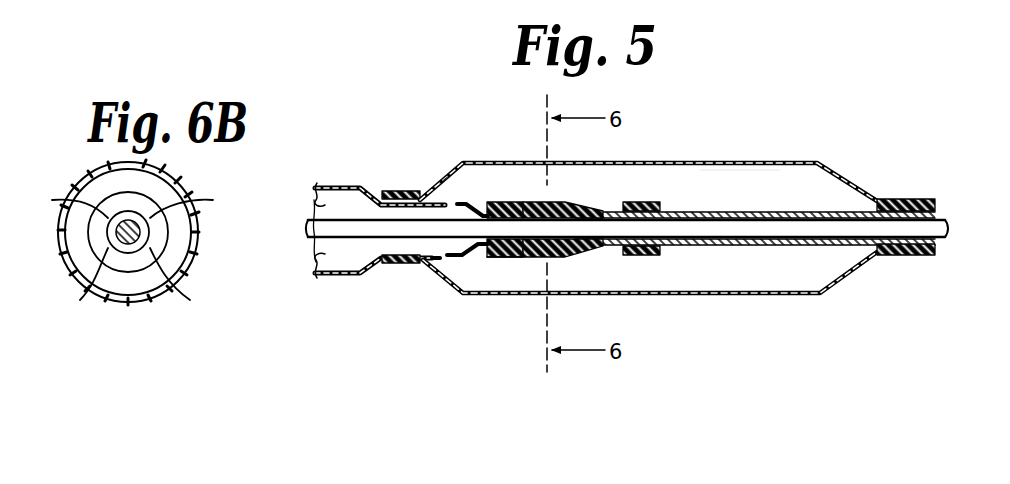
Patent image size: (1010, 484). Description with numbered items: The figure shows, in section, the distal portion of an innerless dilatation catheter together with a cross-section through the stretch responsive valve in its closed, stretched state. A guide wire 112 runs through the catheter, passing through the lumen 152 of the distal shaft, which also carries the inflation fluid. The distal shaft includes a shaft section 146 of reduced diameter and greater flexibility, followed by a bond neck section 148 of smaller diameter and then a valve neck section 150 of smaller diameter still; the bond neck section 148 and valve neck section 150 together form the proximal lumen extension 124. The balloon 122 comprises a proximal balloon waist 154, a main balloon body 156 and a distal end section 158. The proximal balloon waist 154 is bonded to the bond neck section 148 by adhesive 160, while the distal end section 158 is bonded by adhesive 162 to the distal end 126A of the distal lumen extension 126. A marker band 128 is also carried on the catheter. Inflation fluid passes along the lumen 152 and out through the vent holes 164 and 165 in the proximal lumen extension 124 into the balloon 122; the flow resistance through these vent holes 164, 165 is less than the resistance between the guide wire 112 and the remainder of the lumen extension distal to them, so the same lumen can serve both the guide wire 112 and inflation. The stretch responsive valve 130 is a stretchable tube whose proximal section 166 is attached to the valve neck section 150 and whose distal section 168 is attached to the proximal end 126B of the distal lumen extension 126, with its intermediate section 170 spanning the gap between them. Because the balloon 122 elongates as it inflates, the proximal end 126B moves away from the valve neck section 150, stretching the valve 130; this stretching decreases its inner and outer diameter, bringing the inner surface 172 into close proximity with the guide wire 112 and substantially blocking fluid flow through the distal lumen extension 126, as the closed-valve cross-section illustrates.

In FIG. 6B, the guide wire 112 is at (150, 248).
In FIG. 5, the guide wire 112 is at (950, 224).
In FIG. 6B, the balloon 122 is at (160, 300).
In FIG. 5, the balloon 122 is at (748, 300).
In FIG. 5, the proximal lumen extension 124 is at (490, 172).
In FIG. 5, the distal lumen extension 126 is at (778, 190).
In FIG. 5, the distal end of distal lumen extension 126A is at (930, 252).
In FIG. 5, the proximal end of distal lumen extension 126B is at (607, 198).
In FIG. 5, the marker band 128 is at (652, 200).
In FIG. 6B, the stretch responsive valve 130 is at (128, 282).
In FIG. 5, the stretch responsive valve 130 is at (536, 266).
In FIG. 5, the shaft section 146 is at (340, 185).
In FIG. 5, the bond neck section 148 is at (408, 266).
In FIG. 5, the valve neck section 150 is at (490, 260).
In FIG. 5, the lumen 152 is at (320, 204).
In FIG. 5, the proximal balloon waist 154 is at (388, 276).
In FIG. 5, the main balloon body 156 is at (782, 296).
In FIG. 5, the distal end section 158 is at (883, 258).
In FIG. 5, the adhesive 160 is at (400, 188).
In FIG. 5, the adhesive 162 is at (890, 198).
In FIG. 5, the vent hole 164 is at (456, 167).
In FIG. 5, the vent hole 165 is at (422, 264).
In FIG. 6B, the proximal section 166 is at (213, 200).
In FIG. 5, the proximal section 166 is at (461, 204).
In FIG. 5, the distal section 168 is at (605, 262).
In FIG. 6B, the intermediate section 170 is at (54, 200).
In FIG. 5, the intermediate section 170 is at (553, 200).
In FIG. 6B, the inner surface 172 is at (83, 297).